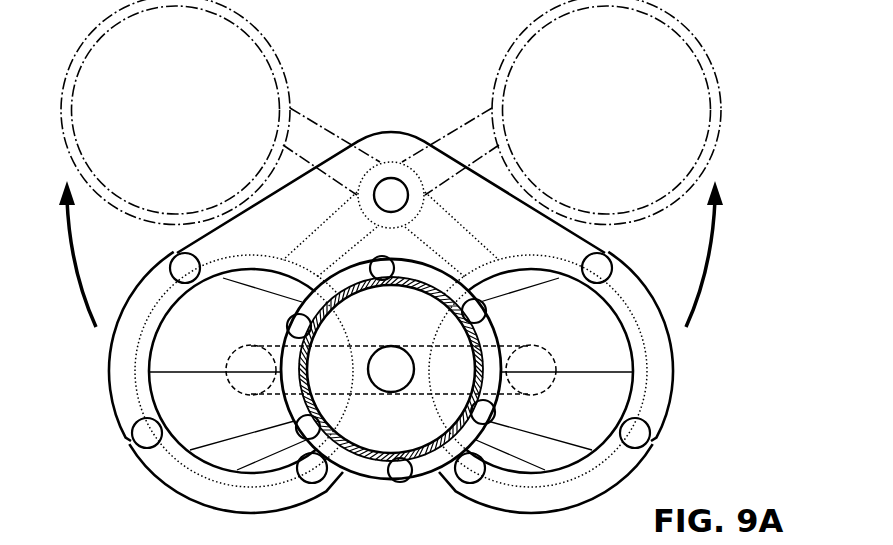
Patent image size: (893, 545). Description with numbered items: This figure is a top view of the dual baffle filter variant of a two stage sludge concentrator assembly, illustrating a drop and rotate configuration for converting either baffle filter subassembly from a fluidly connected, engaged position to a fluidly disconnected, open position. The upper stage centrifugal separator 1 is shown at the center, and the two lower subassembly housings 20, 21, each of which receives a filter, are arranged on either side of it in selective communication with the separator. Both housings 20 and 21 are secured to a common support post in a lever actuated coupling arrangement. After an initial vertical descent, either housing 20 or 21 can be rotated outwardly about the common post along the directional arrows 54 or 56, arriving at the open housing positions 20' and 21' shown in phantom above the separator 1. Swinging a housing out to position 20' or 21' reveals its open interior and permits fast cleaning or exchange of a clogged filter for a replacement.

The centrifugal separator 1 is at (365, 458).
The lower subassembly housing 20 is at (214, 382).
The lower subassembly housing 21 is at (588, 382).
The open housing position 20' is at (220, 112).
The open housing position 21' is at (561, 112).
The directional arrow 54 is at (72, 260).
The directional arrow 56 is at (712, 243).